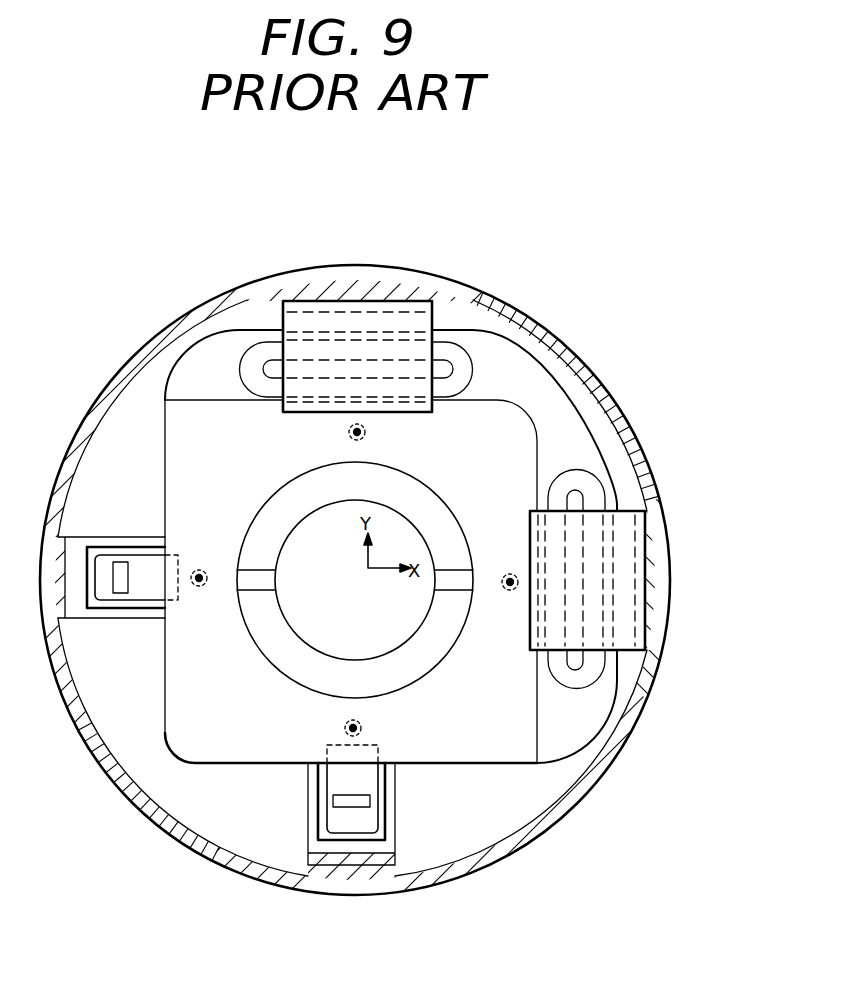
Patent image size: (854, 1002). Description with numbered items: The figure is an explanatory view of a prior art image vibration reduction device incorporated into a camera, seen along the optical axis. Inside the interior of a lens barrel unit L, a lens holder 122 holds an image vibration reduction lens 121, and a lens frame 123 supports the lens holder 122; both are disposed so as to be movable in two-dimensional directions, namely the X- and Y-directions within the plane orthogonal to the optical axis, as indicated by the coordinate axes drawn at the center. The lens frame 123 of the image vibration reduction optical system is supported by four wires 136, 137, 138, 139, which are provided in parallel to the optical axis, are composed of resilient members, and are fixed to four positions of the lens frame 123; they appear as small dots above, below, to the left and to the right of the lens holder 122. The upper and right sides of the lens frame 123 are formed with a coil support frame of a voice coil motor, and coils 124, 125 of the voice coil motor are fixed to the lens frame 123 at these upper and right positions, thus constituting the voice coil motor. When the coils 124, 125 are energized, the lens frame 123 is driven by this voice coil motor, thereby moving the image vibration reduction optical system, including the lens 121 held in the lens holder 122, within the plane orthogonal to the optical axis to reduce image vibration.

The lens barrel unit L is at (478, 870).
The image vibration reduction lens 121 is at (303, 622).
The lens holder 122 is at (325, 682).
The lens frame 123 is at (573, 718).
The coil 124 is at (455, 350).
The coil 125 is at (603, 497).
The wire 136 is at (366, 432).
The wire 137 is at (362, 728).
The wire 138 is at (509, 573).
The wire 139 is at (199, 569).